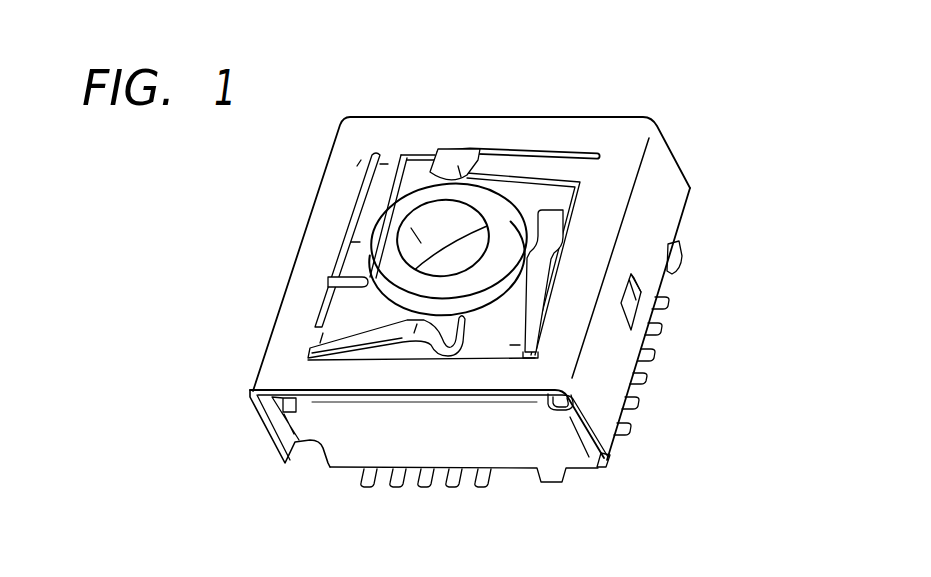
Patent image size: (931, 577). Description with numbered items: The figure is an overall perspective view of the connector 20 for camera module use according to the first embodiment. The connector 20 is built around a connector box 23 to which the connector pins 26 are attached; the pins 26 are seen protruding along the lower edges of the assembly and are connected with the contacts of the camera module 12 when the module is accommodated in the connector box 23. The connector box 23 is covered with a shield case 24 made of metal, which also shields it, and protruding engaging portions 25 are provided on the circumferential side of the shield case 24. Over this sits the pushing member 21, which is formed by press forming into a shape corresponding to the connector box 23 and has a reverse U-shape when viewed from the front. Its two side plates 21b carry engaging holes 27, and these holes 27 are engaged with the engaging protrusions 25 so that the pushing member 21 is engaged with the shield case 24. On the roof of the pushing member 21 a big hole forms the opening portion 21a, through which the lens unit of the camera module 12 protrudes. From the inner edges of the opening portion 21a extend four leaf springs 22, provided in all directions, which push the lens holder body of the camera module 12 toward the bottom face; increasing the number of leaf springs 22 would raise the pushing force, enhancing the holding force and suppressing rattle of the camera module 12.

The connector for camera module use 20 is at (578, 93).
The pushing member 21 is at (355, 162).
The opening portion 21a is at (477, 337).
The side plate 21b is at (593, 400).
The camera module 12 is at (418, 202).
The leaf spring 22 is at (506, 162).
The connector box 23 is at (521, 400).
The shield case 24 is at (587, 460).
The engaging protrusion 25 is at (633, 310).
The connector pin 26 is at (645, 379).
The engaging hole 27 is at (638, 290).